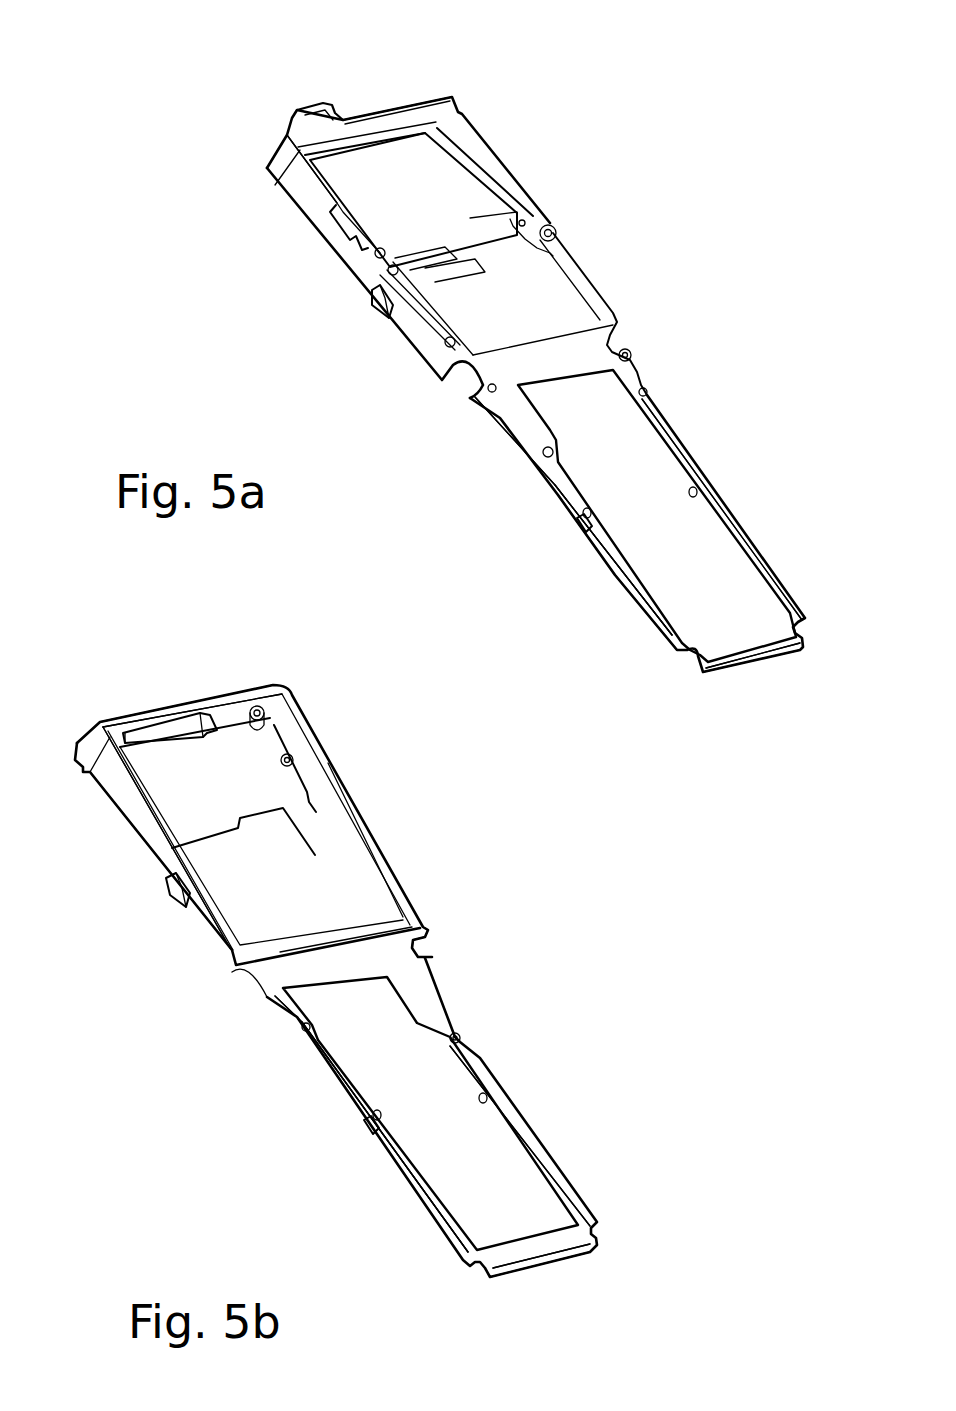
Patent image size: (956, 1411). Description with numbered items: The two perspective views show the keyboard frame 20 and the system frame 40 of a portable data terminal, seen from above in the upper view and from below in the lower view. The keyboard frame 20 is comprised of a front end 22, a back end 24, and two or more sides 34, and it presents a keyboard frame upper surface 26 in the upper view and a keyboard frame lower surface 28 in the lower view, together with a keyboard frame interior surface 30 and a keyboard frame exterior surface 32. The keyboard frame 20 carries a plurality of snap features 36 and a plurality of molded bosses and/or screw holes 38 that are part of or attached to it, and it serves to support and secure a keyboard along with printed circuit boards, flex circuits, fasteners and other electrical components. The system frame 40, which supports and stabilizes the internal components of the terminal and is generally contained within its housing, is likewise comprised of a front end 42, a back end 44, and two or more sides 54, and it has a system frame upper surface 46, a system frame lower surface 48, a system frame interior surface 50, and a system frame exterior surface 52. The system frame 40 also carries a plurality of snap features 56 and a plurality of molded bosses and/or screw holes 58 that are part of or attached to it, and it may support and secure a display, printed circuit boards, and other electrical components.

In FIG. 5A, the keyboard frame 20 is at (777, 573).
In FIG. 5B, the keyboard frame 20 is at (563, 1177).
In FIG. 5B, the front end 22 is at (422, 948).
In FIG. 5A, the back end 24 is at (773, 667).
In FIG. 5B, the back end 24 is at (550, 1272).
In FIG. 5A, the keyboard frame upper surface 26 is at (617, 583).
In FIG. 5B, the keyboard frame lower surface 28 is at (403, 1187).
In FIG. 5A, the keyboard frame interior surface 30 is at (727, 533).
In FIG. 5B, the keyboard frame interior surface 30 is at (517, 1143).
In FIG. 5A, the keyboard frame exterior surface 32 is at (643, 620).
In FIG. 5B, the keyboard frame exterior surface 32 is at (430, 1217).
In FIG. 5A, the sides 34 is at (685, 455).
In FIG. 5B, the sides 34 is at (330, 1073).
In FIG. 5A, the snap features 36 is at (577, 522).
In FIG. 5B, the snap features 36 is at (365, 1122).
In FIG. 5A, the molded bosses and/or screw holes 38 is at (693, 491).
In FIG. 5B, the molded bosses and/or screw holes 38 is at (483, 1096).
In FIG. 5A, the system frame 40 is at (513, 187).
In FIG. 5B, the system frame 40 is at (333, 772).
In FIG. 5A, the front end 42 is at (373, 113).
In FIG. 5B, the front end 42 is at (157, 707).
In FIG. 5A, the back end 44 is at (568, 357).
In FIG. 5A, the system frame upper surface 46 is at (560, 307).
In FIG. 5B, the system frame lower surface 48 is at (343, 897).
In FIG. 5A, the system frame interior surface 50 is at (448, 168).
In FIG. 5B, the system frame interior surface 50 is at (273, 745).
In FIG. 5A, the system frame exterior surface 52 is at (303, 193).
In FIG. 5B, the system frame exterior surface 52 is at (127, 805).
In FIG. 5A, the sides 54 is at (493, 162).
In FIG. 5B, the sides 54 is at (362, 815).
In FIG. 5A, the snap features 56 is at (370, 302).
In FIG. 5B, the snap features 56 is at (170, 897).
In FIG. 5A, the molded bosses and/or screw holes 58 is at (558, 235).
In FIG. 5B, the molded bosses and/or screw holes 58 is at (287, 748).